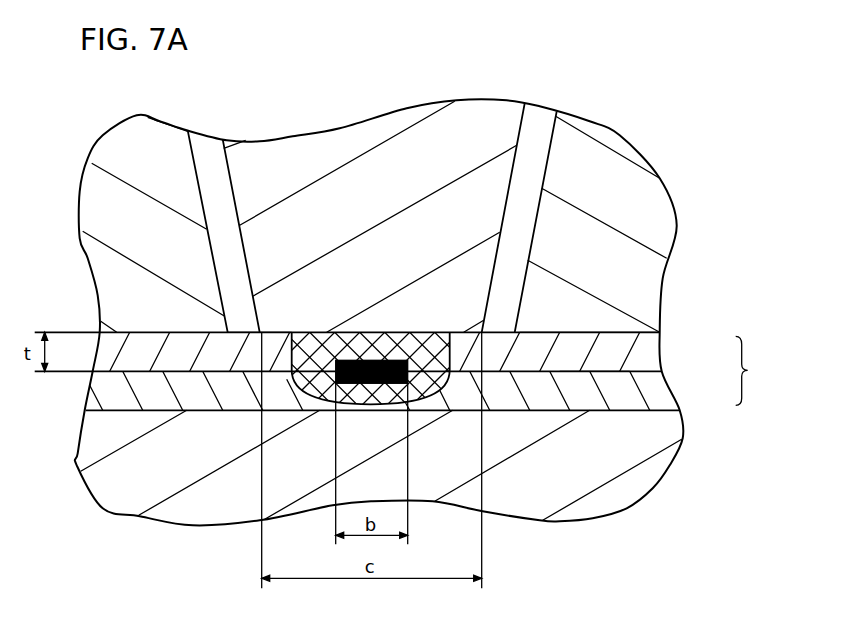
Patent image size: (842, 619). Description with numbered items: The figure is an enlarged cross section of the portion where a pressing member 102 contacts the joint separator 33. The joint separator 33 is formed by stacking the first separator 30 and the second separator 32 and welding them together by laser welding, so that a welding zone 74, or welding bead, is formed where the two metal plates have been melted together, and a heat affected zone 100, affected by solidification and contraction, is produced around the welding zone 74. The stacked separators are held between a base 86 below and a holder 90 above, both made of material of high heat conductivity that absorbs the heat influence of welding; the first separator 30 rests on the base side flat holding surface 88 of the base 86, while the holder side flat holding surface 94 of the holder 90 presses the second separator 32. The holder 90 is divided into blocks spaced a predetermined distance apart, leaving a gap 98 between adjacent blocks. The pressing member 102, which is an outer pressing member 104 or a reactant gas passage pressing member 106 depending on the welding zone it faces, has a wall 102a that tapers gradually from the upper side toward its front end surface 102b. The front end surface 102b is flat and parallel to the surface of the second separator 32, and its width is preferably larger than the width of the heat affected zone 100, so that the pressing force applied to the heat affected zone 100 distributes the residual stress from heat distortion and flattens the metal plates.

The first separator 30 is at (657, 396).
The second separator 32 is at (657, 355).
The joint separator 33 is at (405, 371).
The welding zone 74 is at (367, 360).
The base 86 is at (114, 490).
The base side flat holding surface 88 is at (591, 374).
The holder 90 is at (115, 148).
The holder side flat holding surface 94 is at (586, 335).
The gap 98 is at (204, 153).
The heat affected zone 100 is at (408, 348).
The pressing member 102 is at (370, 216).
The wall 102a is at (527, 129).
The front end surface 102b is at (284, 348).
The outer pressing member 104 is at (302, 157).
The reactant gas passage pressing member 106 is at (370, 216).